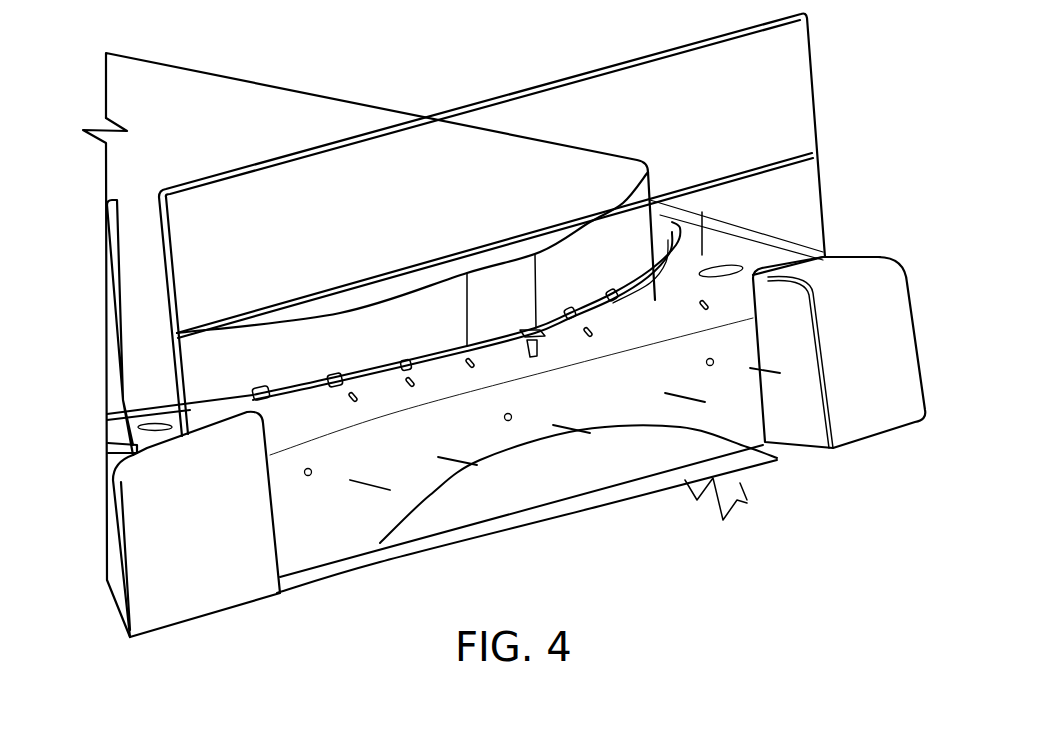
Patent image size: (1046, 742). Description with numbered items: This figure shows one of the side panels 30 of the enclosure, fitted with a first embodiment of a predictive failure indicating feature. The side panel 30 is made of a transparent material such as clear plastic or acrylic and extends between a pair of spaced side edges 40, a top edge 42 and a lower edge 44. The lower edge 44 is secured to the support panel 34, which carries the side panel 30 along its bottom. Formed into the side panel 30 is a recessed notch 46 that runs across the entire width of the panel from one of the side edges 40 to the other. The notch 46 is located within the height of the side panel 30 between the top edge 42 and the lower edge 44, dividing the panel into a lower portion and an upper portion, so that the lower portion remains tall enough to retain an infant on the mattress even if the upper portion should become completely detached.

The side panel 30 is at (270, 183).
The support panel 34 is at (790, 340).
The side edges 40 is at (160, 193).
The top edge 42 is at (556, 78).
The lower edge 44 is at (820, 263).
The recessed notch 46 is at (787, 170).